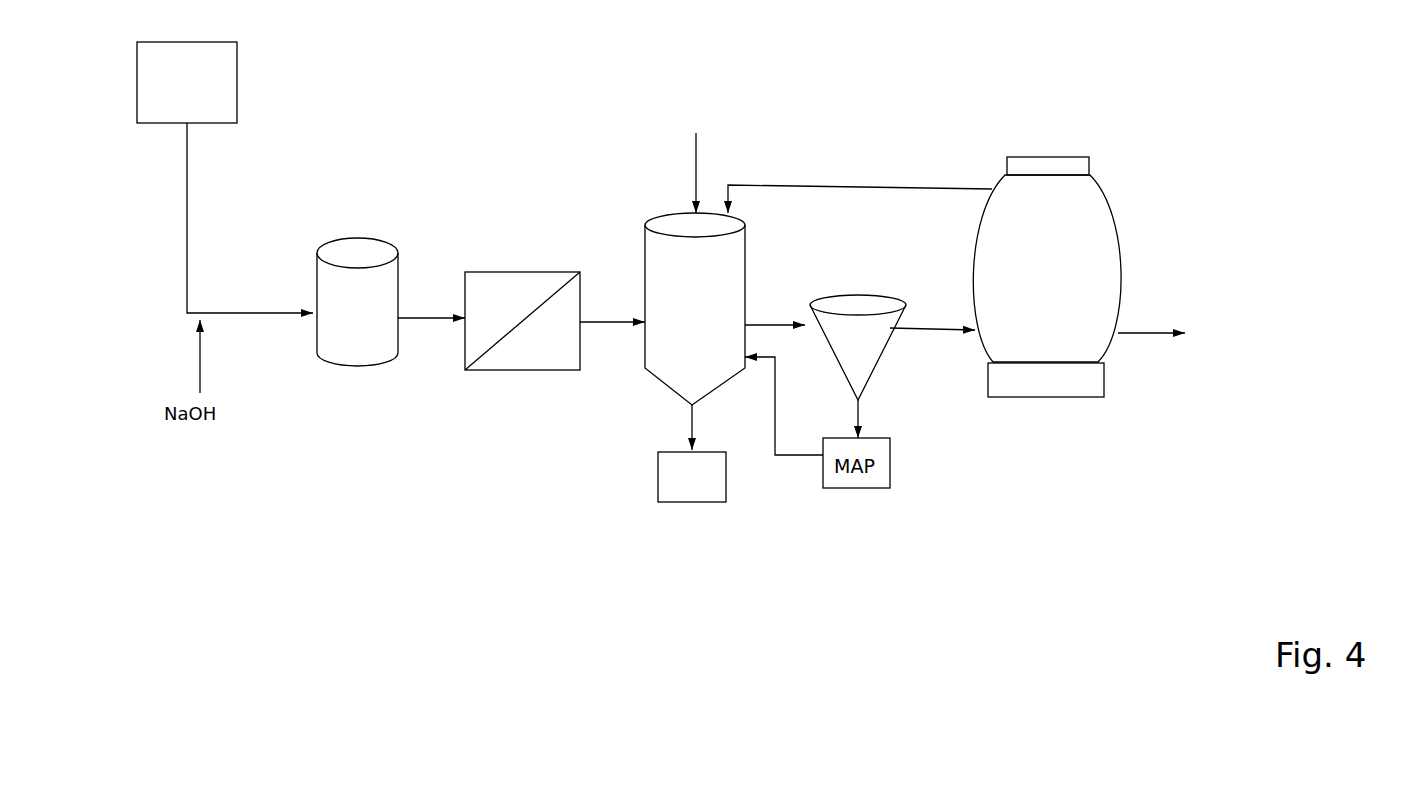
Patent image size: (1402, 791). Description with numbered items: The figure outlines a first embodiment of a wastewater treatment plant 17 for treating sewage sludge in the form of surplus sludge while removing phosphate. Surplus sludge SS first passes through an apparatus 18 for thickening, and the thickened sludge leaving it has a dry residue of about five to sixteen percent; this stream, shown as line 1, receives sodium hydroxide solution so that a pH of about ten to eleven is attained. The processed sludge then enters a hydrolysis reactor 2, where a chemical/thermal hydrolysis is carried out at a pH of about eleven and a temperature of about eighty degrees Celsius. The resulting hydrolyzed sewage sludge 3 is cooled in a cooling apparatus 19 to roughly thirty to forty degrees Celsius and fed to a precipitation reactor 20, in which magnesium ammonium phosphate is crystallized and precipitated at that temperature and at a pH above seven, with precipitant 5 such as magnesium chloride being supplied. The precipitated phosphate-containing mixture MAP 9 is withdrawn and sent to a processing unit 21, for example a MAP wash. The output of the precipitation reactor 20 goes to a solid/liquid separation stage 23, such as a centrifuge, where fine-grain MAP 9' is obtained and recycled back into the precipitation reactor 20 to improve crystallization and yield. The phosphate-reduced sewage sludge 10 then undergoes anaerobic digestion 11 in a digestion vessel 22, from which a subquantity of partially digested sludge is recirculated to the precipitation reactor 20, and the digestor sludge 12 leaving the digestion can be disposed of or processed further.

The sewage sludge feed line 1 is at (236, 218).
The hydrolysis reactor 2 is at (350, 240).
The hydrolyzed sewage sludge 3 is at (612, 308).
The precipitant 5 is at (703, 160).
The phosphate-containing mixture MAP 9 is at (678, 427).
The fine-grain MAP 9' is at (874, 419).
The sewage sludge 10 is at (932, 315).
The digestion 11 is at (1046, 263).
The digestor sludge 12 is at (1151, 321).
The wastewater treatment plant 17 is at (520, 106).
The apparatus for thickening surplus sludge 18 is at (187, 82).
The cooling apparatus 19 is at (504, 272).
The precipitation reactor 20 is at (745, 245).
The processing unit 21 is at (692, 477).
The digestion vessel 22 is at (1078, 277).
The solid/liquid separation stage 23 is at (860, 296).